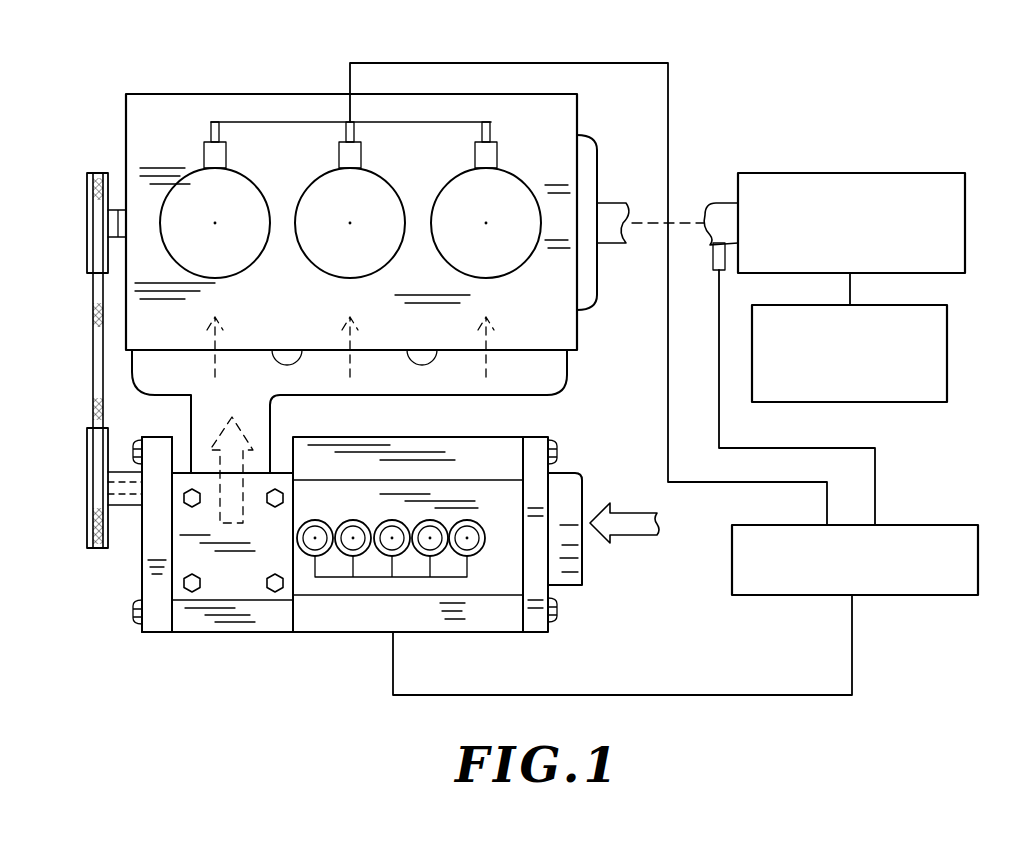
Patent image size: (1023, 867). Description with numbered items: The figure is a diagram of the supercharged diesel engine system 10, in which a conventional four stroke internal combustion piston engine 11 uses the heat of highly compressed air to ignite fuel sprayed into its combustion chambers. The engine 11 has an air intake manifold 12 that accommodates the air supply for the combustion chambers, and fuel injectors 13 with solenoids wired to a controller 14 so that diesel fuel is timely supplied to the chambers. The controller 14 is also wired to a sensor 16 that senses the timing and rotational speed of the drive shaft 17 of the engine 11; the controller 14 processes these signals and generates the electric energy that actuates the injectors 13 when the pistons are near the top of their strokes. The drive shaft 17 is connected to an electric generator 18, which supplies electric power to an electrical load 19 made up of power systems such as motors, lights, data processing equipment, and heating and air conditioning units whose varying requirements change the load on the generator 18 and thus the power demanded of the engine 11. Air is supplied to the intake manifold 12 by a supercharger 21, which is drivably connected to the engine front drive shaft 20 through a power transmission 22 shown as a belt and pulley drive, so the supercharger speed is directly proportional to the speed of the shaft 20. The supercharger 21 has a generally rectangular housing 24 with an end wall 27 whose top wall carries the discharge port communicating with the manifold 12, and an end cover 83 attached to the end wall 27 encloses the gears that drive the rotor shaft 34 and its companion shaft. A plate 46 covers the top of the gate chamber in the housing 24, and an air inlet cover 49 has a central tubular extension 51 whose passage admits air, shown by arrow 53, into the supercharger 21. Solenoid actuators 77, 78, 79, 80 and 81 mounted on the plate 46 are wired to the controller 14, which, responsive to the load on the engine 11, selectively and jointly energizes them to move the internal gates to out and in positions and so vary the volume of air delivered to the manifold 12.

The supercharged diesel engine system 10 is at (736, 96).
The internal combustion piston engine 11 is at (162, 92).
The air intake manifold 12 is at (552, 363).
The fuel injectors 13 is at (205, 148).
The controller 14 is at (928, 525).
The sensor 16 is at (713, 255).
The drive shaft 17 is at (613, 204).
The electric generator 18 is at (884, 173).
The electrical load 19 is at (937, 350).
The engine front drive shaft 20 is at (115, 212).
The supercharger 21 is at (224, 657).
The power transmission 22 is at (98, 350).
The housing 24 is at (503, 617).
The end wall 27 is at (192, 622).
The shaft 34 is at (128, 494).
The plate 46 is at (510, 578).
The air inlet cover 49 is at (537, 443).
The tubular extension 51 is at (568, 490).
The arrow 53 is at (640, 527).
The solenoid actuator 77 is at (305, 556).
The solenoid actuator 78 is at (343, 556).
The solenoid actuator 79 is at (385, 556).
The solenoid actuator 80 is at (425, 556).
The solenoid actuator 81 is at (475, 556).
The end cover 83 is at (152, 582).